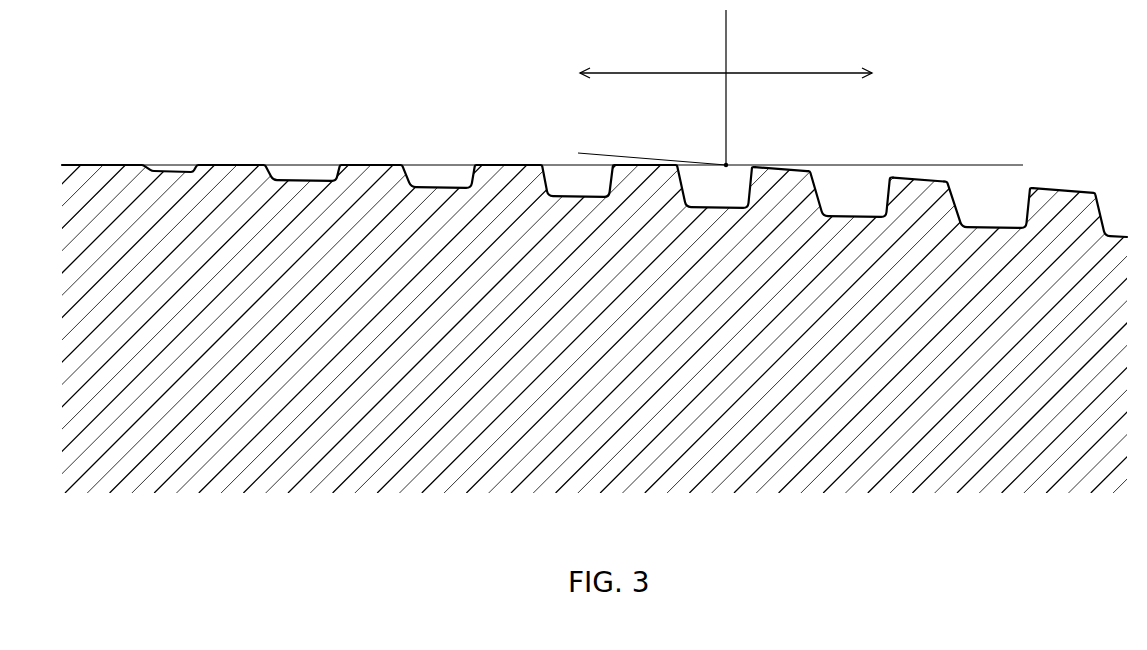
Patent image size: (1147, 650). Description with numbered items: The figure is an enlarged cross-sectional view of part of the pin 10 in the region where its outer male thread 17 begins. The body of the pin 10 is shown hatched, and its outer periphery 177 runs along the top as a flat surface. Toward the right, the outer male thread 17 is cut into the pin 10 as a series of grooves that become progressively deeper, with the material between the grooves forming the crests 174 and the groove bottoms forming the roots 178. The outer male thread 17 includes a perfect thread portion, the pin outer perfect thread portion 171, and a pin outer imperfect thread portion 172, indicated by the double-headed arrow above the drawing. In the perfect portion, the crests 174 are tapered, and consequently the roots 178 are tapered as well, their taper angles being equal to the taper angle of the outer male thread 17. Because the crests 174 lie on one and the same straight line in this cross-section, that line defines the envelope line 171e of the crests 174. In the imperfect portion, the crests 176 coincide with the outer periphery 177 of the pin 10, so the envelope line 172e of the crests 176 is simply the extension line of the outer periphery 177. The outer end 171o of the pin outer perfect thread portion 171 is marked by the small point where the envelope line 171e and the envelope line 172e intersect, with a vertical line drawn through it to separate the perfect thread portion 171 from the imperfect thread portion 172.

The pin 10 is at (195, 506).
The outer male thread 17 is at (788, 182).
The pin outer perfect thread portion 171 is at (800, 73).
The outer end of pin outer perfect thread portion 171o is at (728, 165).
The envelope line of the crests of the pin outer perfect thread portion 171e is at (990, 183).
The pin outer imperfect thread portion 172 is at (640, 73).
The envelope line of the crests of the pin outer imperfect thread portion 172e is at (424, 165).
The crests of the pin outer perfect thread portion 174 is at (923, 177).
The crests of the pin outer imperfect thread portion 176 is at (512, 165).
The outer periphery of the pin 177 is at (92, 165).
The roots of the pin outer perfect thread portion 178 is at (855, 216).